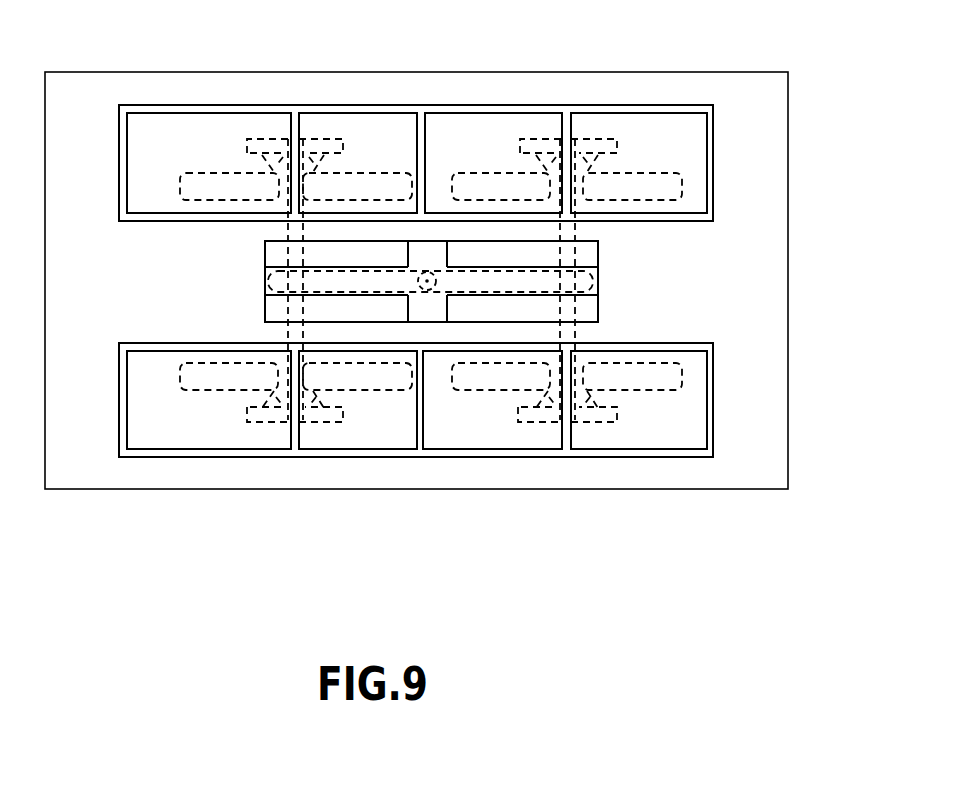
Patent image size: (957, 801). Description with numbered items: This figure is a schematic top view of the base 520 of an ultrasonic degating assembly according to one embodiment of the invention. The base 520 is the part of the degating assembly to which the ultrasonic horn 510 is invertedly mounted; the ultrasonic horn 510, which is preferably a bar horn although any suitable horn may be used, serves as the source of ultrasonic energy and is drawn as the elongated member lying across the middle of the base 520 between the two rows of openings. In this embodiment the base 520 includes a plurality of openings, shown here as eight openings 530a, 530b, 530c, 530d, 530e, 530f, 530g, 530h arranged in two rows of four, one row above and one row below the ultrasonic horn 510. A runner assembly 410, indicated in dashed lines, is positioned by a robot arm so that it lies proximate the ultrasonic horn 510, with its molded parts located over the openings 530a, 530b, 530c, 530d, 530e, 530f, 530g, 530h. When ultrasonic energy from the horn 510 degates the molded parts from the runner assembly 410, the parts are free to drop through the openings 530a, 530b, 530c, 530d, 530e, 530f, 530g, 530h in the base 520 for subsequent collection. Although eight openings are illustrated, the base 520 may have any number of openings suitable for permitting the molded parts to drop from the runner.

The runner assembly 410 is at (207, 372).
The ultrasonic horn 510 is at (597, 306).
The base 520 is at (770, 440).
The opening 530a is at (197, 130).
The opening 530b is at (362, 130).
The opening 530c is at (197, 437).
The opening 530d is at (357, 437).
The opening 530e is at (491, 130).
The opening 530f is at (641, 130).
The opening 530g is at (452, 437).
The opening 530h is at (652, 437).